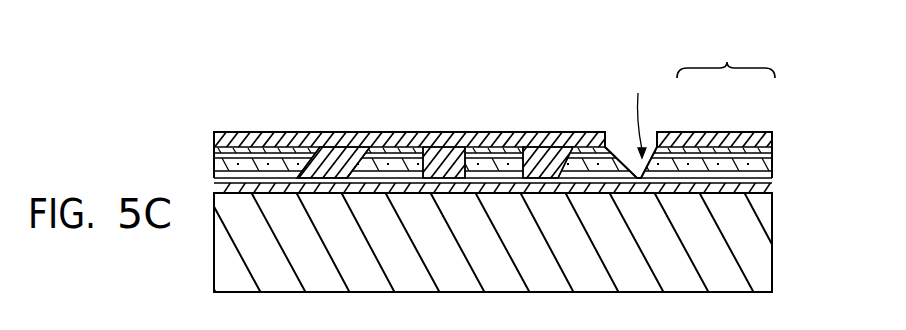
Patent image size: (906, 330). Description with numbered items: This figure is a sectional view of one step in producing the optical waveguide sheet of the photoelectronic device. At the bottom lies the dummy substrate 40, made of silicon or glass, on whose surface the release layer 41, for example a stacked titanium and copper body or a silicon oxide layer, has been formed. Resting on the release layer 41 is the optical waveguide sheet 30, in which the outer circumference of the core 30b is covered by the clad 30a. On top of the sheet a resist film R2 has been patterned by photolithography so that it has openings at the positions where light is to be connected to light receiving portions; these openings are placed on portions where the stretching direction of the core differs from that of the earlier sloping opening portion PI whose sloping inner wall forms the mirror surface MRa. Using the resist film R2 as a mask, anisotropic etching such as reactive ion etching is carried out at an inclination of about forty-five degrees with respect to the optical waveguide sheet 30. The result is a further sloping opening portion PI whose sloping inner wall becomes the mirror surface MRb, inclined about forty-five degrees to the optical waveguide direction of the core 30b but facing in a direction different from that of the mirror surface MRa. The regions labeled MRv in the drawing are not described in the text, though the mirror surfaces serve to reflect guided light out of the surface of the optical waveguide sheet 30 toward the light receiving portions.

The dummy substrate 40 is at (762, 263).
The release layer 41 is at (773, 183).
The resist film R2 is at (773, 137).
The optical waveguide sheet 30 is at (496, 100).
The clad 30a is at (733, 160).
The core 30b is at (696, 150).
The mirror surface MRa is at (356, 148).
The MR region MRv is at (558, 148).
The mirror surface MRb is at (623, 162).
The sloping opening portion PI is at (644, 110).